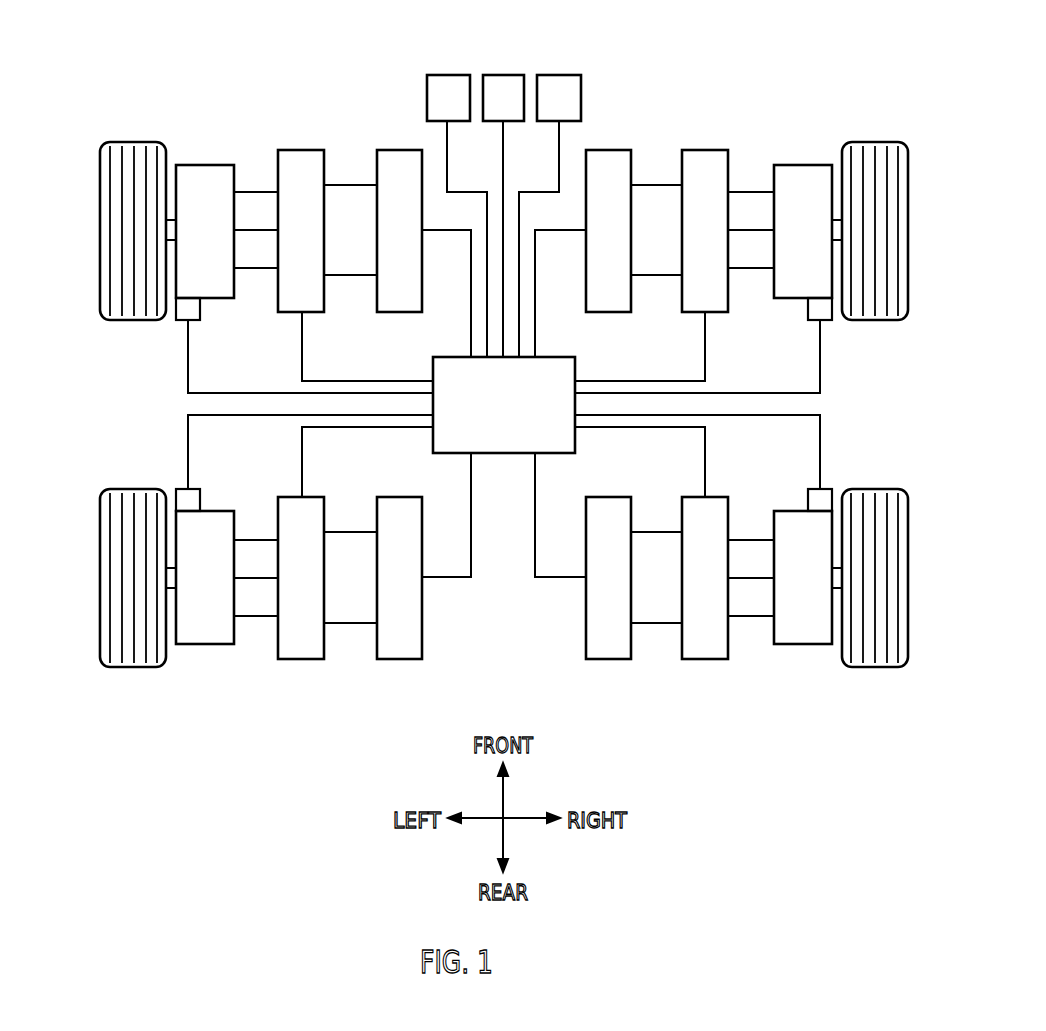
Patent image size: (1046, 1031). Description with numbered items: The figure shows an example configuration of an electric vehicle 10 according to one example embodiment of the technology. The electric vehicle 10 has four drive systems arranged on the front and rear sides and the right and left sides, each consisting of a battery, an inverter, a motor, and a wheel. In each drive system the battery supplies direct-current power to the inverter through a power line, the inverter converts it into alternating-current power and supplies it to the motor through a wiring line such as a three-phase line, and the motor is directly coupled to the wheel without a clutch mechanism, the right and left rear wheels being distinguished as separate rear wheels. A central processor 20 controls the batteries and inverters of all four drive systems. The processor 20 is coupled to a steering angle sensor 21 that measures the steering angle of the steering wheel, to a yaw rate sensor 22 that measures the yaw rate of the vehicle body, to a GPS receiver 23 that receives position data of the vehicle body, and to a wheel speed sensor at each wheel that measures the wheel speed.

The electric vehicle 10 is at (348, 88).
The processor 20 is at (562, 357).
The steering angle sensor 21 is at (563, 72).
The yaw rate sensor 22 is at (503, 72).
The GPS receiver 23 is at (445, 72).